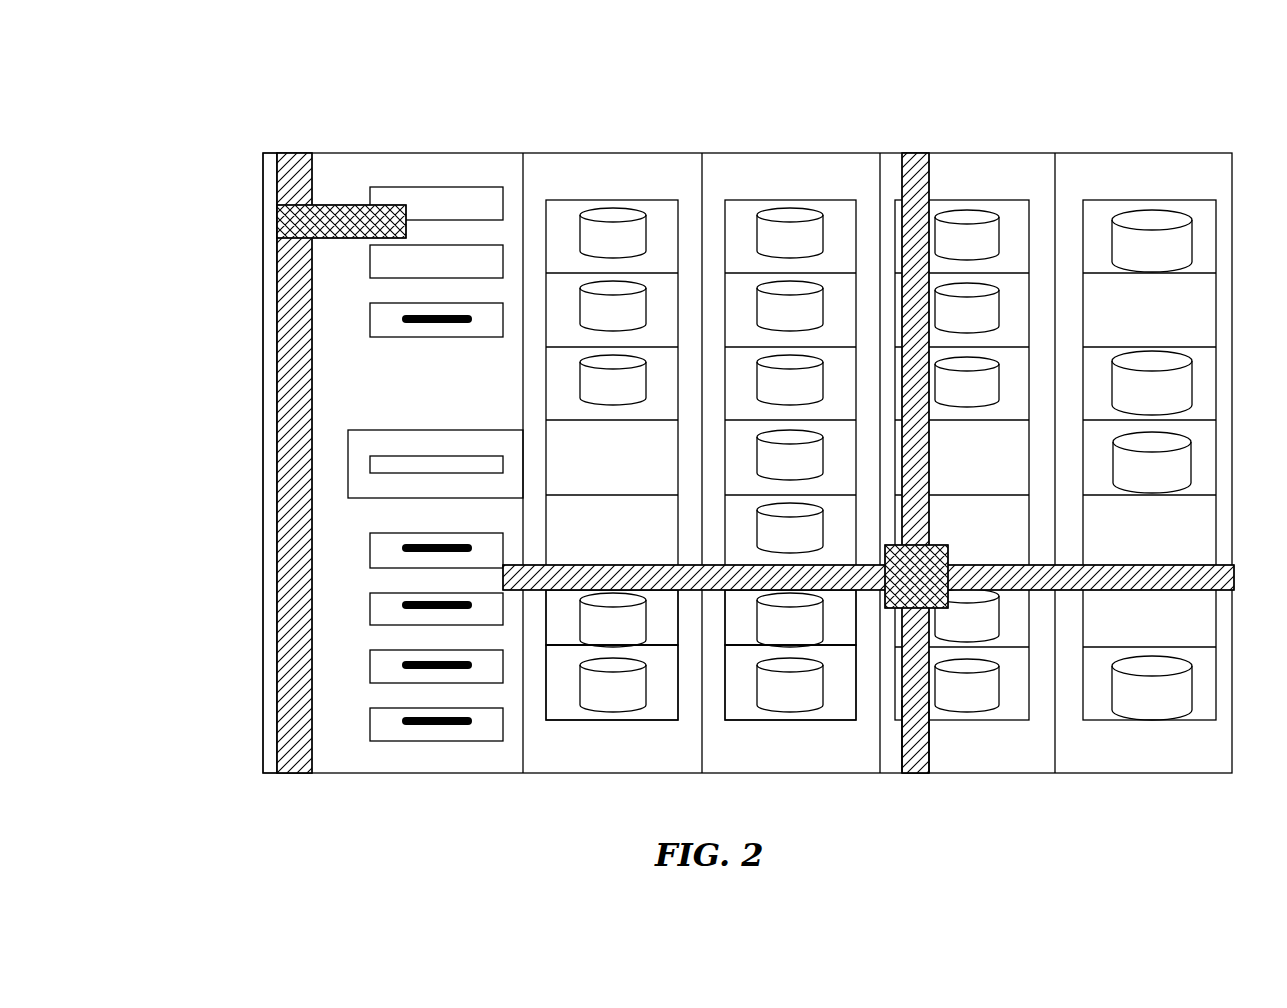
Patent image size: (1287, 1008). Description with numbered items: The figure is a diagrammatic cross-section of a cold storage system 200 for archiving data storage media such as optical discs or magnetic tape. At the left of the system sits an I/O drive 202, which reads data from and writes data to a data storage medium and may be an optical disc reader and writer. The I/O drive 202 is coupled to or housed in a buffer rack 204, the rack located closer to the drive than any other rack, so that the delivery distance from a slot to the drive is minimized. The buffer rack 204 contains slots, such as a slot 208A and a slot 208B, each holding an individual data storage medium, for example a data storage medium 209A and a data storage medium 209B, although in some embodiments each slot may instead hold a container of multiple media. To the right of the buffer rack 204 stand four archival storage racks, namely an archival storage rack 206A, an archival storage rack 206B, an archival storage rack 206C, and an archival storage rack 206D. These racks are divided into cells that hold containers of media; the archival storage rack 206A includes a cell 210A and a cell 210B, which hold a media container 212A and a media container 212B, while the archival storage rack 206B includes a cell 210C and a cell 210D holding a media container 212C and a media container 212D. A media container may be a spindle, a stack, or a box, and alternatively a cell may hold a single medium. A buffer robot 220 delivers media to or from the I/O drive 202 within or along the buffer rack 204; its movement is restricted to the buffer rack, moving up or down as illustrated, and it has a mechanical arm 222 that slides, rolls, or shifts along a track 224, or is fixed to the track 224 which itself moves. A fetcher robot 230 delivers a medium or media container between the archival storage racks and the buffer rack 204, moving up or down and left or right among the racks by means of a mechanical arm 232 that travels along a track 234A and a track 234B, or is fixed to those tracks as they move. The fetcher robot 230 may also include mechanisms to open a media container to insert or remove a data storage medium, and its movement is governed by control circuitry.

The cold storage system 200 is at (212, 132).
The I/O drive 202 is at (350, 466).
The buffer rack 204 is at (438, 150).
The archival storage rack 206A is at (611, 150).
The archival storage rack 206B is at (783, 150).
The archival storage rack 206C is at (981, 150).
The archival storage rack 206D is at (1133, 150).
The slot 208A is at (372, 742).
The slot 208B is at (370, 674).
The data storage medium 209A is at (441, 724).
The data storage medium 209B is at (404, 665).
The cell 210A is at (585, 722).
The cell 210B is at (660, 648).
The cell 210C is at (772, 722).
The cell 210D is at (845, 648).
The media container 212A is at (635, 699).
The media container 212B is at (635, 634).
The media container 212C is at (812, 699).
The media container 212D is at (812, 634).
The buffer robot 220 is at (268, 581).
The mechanical arm 222 is at (321, 210).
The track 224 is at (297, 162).
The fetcher robot 230 is at (936, 762).
The mechanical arm 232 is at (946, 545).
The track 234A is at (925, 154).
The track 234B is at (1172, 592).